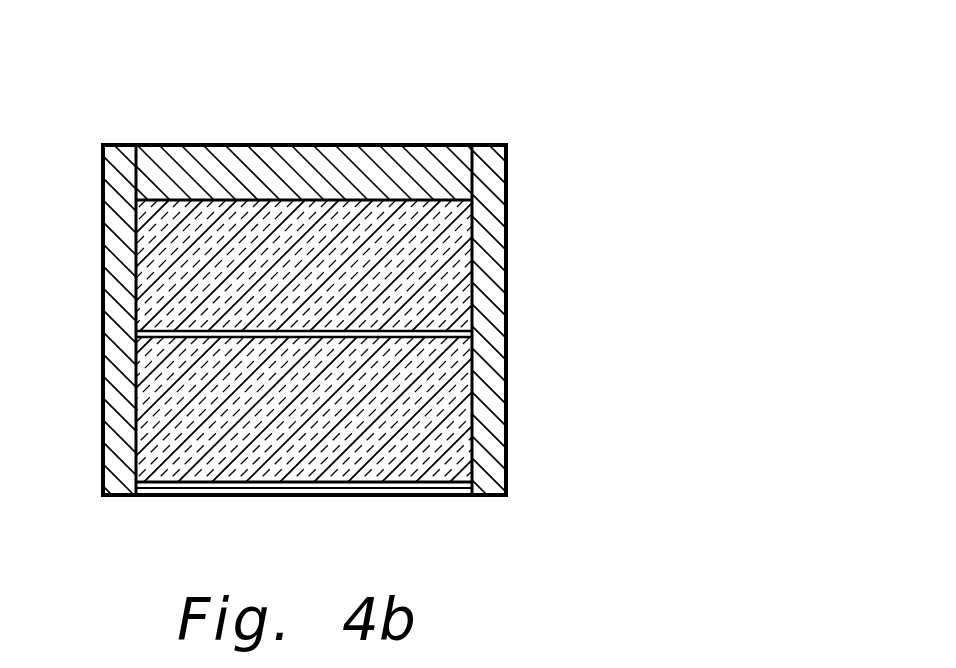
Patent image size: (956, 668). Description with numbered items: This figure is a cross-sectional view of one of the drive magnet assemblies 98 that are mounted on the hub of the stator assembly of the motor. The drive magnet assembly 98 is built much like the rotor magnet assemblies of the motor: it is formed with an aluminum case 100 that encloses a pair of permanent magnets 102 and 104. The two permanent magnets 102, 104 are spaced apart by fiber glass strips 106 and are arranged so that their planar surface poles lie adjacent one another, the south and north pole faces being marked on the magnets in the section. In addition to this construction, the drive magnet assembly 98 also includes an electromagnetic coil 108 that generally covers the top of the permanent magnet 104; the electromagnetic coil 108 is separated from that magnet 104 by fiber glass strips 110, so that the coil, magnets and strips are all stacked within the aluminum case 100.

The drive magnet assembly 98 is at (510, 169).
The aluminum case 100 is at (490, 143).
The permanent magnet 102 is at (430, 268).
The permanent magnet 104 is at (433, 393).
The fiber glass strips 106 is at (433, 336).
The electromagnetic coil 108 is at (340, 493).
The fiber glass strips 110 is at (275, 485).